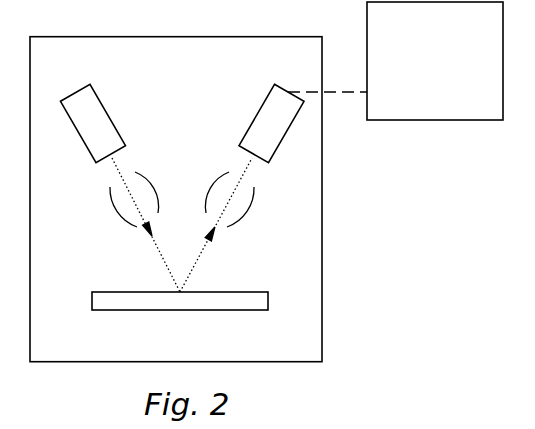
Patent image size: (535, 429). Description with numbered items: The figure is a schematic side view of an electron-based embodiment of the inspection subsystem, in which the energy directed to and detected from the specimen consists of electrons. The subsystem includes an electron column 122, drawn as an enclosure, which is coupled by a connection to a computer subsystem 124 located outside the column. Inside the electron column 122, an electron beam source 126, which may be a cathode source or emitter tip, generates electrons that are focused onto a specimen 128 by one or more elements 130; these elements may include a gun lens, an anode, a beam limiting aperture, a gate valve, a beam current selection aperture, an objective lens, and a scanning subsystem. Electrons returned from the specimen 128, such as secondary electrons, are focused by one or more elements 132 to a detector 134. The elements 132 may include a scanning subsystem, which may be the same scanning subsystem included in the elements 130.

The electron column 122 is at (163, 37).
The computer subsystem 124 is at (417, 100).
The electron beam source 126 is at (97, 95).
The specimen 128 is at (225, 290).
The one or more elements 130 is at (120, 220).
The one or more elements 132 is at (244, 220).
The detector 134 is at (265, 98).